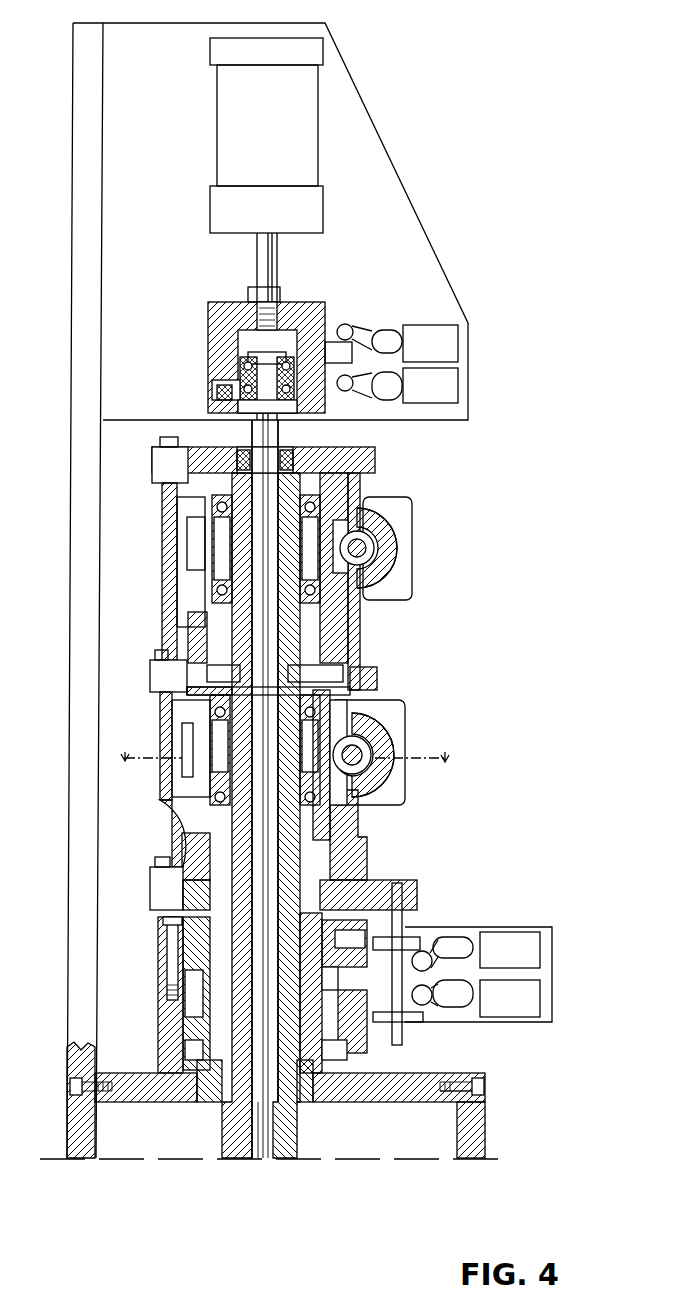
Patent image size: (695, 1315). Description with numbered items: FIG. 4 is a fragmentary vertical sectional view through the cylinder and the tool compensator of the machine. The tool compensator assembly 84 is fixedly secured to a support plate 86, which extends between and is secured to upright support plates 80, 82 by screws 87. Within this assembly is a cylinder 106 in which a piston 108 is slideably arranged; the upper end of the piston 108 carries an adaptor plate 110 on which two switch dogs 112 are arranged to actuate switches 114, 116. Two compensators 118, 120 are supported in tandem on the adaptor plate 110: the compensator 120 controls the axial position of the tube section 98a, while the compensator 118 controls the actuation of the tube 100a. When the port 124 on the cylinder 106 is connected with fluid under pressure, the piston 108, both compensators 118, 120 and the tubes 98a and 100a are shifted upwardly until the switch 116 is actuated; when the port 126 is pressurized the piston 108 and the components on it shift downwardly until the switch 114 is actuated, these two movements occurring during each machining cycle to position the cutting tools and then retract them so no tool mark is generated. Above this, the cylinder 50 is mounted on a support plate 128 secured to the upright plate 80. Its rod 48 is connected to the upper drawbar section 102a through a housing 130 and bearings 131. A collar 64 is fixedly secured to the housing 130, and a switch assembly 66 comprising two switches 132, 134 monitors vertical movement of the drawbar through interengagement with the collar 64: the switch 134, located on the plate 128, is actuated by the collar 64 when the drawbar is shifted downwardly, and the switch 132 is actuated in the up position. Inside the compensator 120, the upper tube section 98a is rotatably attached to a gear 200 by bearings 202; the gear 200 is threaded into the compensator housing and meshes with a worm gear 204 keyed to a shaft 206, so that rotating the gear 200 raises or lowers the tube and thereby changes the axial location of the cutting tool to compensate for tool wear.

The rod 48 is at (278, 258).
The cylinder 50 is at (228, 122).
The collar 64 is at (336, 368).
The switch assembly 66 is at (437, 370).
The upright support plate 80 is at (70, 1122).
The upright support plate 82 is at (485, 1136).
The tool compensator assembly 84 is at (310, 658).
The support plate 86 is at (432, 1079).
The screws 87 is at (70, 1086).
The upper section of tube 98a is at (298, 1141).
The tube 100a is at (280, 1160).
The upper drawbar section 102a is at (252, 1160).
The cylinder 106 is at (168, 1005).
The piston 108 is at (186, 1025).
The adaptor plate 110 is at (417, 893).
The switch dogs 112 is at (420, 937).
The switch 114 is at (540, 949).
The switch 116 is at (540, 1000).
The compensator 118 is at (412, 531).
The compensator 120 is at (402, 716).
The port 124 is at (367, 1056).
The port 126 is at (345, 943).
The support plate 128 is at (370, 127).
The housing 130 is at (320, 303).
The bearings 131 is at (240, 368).
The switch 132 is at (458, 338).
The switch 134 is at (458, 385).
The gear 200 is at (345, 700).
The bearings 202 is at (212, 714).
The worm gear 204 is at (372, 748).
The shaft 206 is at (362, 765).